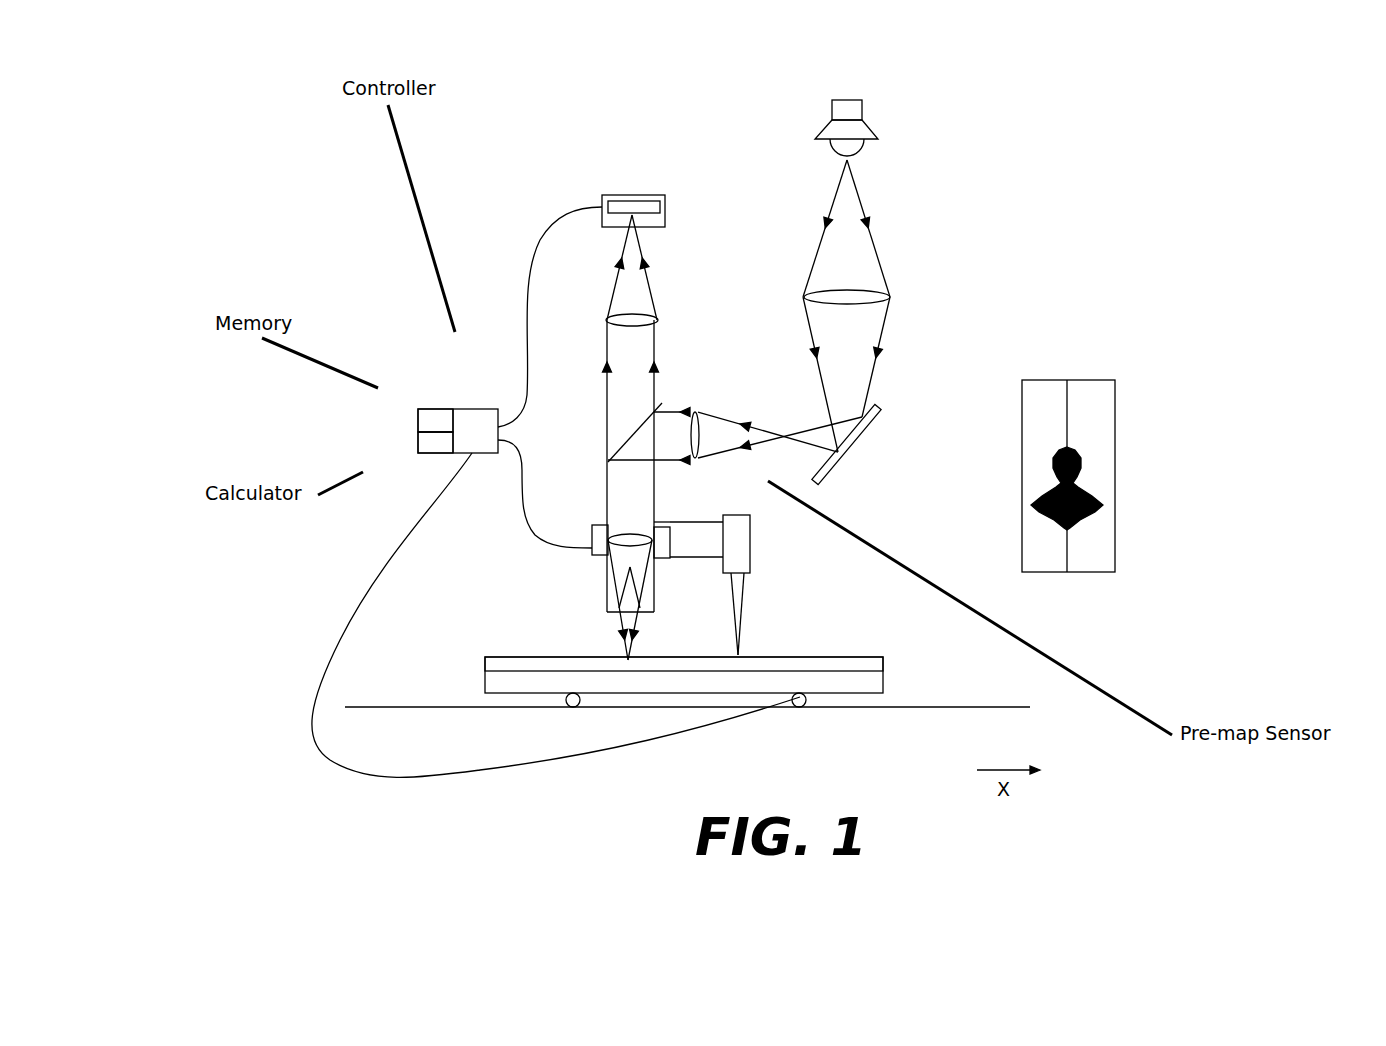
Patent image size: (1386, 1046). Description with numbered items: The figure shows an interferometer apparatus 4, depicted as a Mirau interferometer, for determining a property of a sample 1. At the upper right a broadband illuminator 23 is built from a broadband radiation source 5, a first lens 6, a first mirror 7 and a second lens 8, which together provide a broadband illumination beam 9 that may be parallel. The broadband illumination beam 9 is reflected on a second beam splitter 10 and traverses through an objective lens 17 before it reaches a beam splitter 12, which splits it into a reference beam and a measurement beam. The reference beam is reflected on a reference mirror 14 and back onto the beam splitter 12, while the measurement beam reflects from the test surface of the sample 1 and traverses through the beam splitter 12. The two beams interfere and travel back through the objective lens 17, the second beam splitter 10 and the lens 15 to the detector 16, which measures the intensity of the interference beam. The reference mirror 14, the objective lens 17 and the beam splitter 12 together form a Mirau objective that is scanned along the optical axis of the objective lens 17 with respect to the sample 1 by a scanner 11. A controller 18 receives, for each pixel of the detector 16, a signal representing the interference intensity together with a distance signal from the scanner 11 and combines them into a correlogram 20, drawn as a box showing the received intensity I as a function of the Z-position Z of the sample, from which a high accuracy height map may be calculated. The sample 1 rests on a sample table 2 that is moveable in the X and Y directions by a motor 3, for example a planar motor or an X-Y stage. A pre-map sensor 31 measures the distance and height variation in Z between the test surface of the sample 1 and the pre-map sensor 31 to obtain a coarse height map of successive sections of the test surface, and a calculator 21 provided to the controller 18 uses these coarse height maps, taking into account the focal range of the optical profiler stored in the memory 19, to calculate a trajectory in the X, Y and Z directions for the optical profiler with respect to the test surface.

The sample 1 is at (777, 657).
The sample table 2 is at (883, 685).
The motor 3 is at (806, 700).
The interferometer apparatus 4 is at (764, 92).
The broadband radiation source 5 is at (862, 110).
The first lens 6 is at (890, 297).
The first mirror 7 is at (868, 446).
The second lens 8 is at (696, 412).
The broadband illumination beam 9 is at (672, 412).
The second beam splitter 10 is at (612, 455).
The scanner 11 is at (592, 545).
The beam splitter 12 is at (615, 614).
The reference mirror 14 is at (630, 567).
The lens 15 is at (606, 320).
The detector 16 is at (602, 205).
The objective lens 17 is at (628, 538).
The controller 18 is at (462, 409).
The memory 19 is at (418, 422).
The correlogram 20 is at (1115, 565).
The calculator 21 is at (418, 445).
The broadband illuminator 23 is at (788, 385).
The pre-map sensor 31 is at (735, 515).